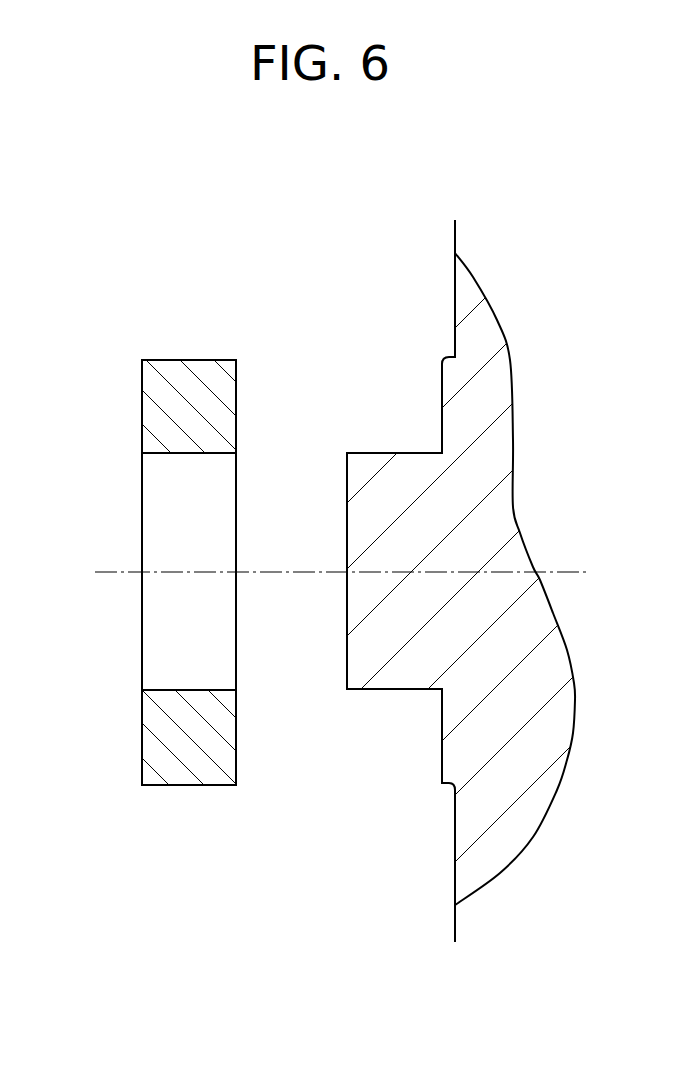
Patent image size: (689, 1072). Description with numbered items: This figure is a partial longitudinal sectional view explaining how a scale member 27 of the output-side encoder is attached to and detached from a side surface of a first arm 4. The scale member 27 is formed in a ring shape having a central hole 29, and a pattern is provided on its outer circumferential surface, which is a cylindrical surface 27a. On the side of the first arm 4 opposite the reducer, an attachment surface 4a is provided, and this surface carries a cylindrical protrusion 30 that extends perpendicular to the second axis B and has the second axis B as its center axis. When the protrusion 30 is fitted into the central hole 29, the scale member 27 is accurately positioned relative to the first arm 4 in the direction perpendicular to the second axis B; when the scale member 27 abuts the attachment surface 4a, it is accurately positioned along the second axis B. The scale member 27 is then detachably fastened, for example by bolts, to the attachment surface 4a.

The first arm 4 is at (465, 240).
The attachment surface 4a is at (443, 418).
The protrusion 30 is at (348, 657).
The scale member 27 is at (167, 581).
The cylindrical surface 27a is at (192, 359).
The central hole 29 is at (163, 455).
The second axis B is at (557, 570).